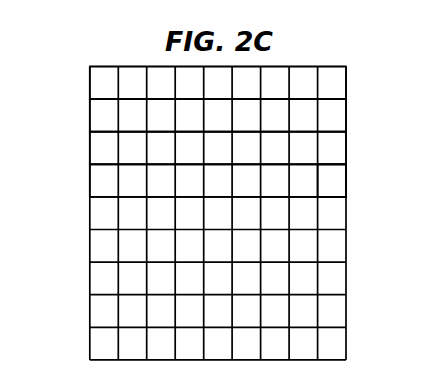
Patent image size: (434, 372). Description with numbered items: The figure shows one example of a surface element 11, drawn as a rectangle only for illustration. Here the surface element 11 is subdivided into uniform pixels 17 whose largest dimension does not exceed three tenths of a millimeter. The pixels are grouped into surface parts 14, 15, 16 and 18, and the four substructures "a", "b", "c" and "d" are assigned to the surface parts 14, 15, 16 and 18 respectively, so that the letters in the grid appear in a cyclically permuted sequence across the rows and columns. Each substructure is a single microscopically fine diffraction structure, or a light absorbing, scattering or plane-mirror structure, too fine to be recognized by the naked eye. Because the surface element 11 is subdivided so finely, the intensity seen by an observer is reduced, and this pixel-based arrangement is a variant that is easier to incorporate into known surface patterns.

The surface element 11 is at (347, 239).
The surface part 14 is at (90, 89).
The surface part 15 is at (90, 122).
The surface part 16 is at (90, 154).
The surface part 18 is at (90, 186).
The pixel 17 is at (339, 188).